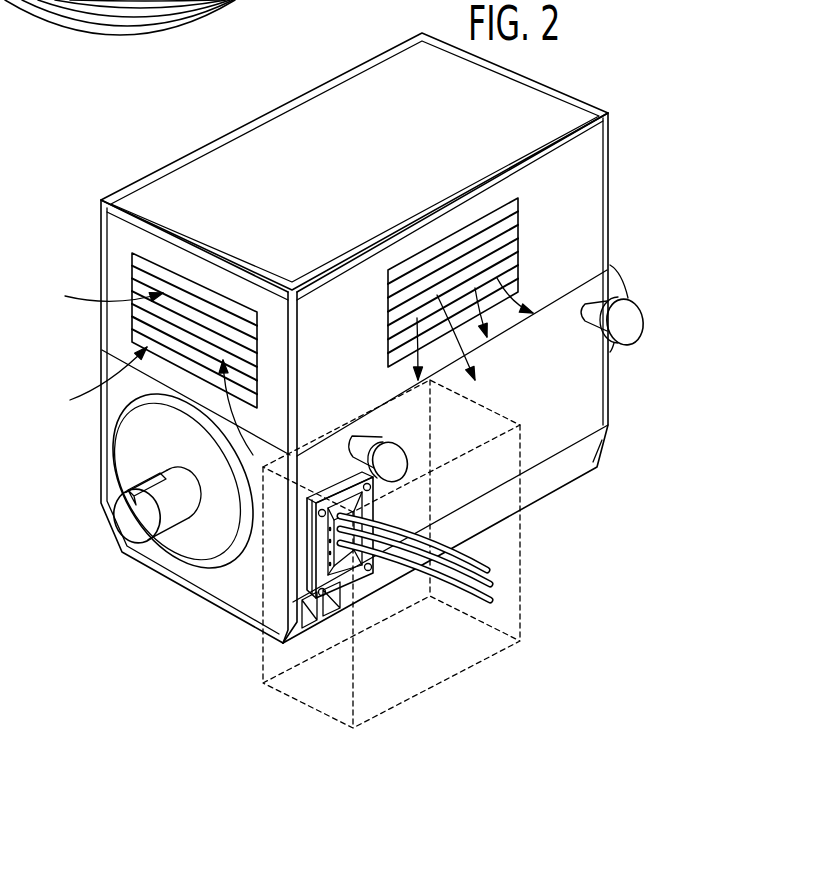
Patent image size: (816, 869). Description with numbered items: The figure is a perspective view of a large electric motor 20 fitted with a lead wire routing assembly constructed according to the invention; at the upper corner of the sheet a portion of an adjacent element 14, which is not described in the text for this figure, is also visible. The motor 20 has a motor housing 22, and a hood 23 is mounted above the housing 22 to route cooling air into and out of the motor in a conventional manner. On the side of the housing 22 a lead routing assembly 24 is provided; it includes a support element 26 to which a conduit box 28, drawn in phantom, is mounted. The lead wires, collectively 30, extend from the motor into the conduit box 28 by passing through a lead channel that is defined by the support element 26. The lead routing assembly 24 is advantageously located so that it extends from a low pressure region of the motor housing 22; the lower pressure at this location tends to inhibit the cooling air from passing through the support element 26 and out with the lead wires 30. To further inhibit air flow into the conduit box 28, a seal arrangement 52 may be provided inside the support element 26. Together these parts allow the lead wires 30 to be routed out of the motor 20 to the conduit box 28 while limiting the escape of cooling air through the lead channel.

The fiber optic cable coil 14 is at (50, 14).
The motor 20 is at (392, 338).
The motor housing 22 is at (560, 378).
The hood 23 is at (548, 113).
The lead routing assembly 24 is at (392, 517).
The support element 26 is at (328, 490).
The conduit box 28 is at (518, 522).
The lead wires 30 is at (417, 588).
The seal arrangement 52 is at (343, 573).